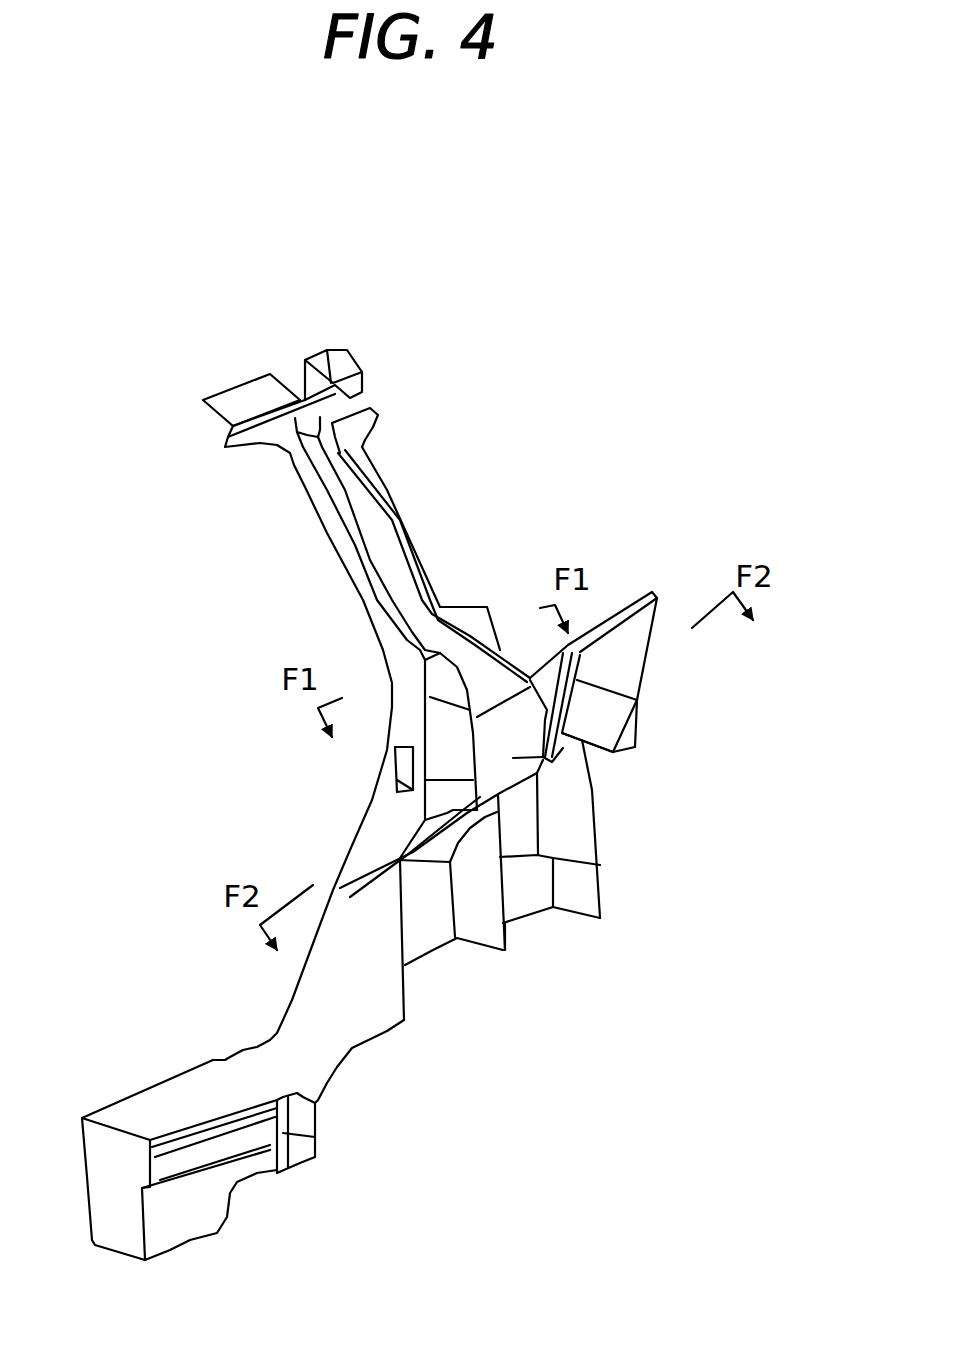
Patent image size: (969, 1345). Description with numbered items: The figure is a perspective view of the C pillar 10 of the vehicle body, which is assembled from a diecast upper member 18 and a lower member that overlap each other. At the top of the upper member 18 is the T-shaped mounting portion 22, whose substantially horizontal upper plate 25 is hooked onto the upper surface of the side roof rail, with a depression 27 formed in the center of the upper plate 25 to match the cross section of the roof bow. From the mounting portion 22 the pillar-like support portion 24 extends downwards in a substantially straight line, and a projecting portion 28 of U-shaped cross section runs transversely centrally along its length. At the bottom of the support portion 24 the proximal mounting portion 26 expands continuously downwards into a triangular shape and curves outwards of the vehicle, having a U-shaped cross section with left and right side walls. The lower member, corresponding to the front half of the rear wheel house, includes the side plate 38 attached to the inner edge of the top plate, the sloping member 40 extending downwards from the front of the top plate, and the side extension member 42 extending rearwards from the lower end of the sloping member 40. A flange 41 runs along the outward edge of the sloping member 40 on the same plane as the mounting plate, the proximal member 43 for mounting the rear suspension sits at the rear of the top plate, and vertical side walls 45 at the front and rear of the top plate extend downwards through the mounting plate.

The C pillar 10 is at (575, 420).
The upper member 18 is at (440, 515).
The mounting portion 22 is at (178, 438).
The support portion 24 is at (340, 476).
The upper plate 25 is at (240, 403).
The proximal mounting portion 26 is at (543, 757).
The depression 27 is at (292, 382).
The projecting portion 28 is at (402, 578).
The side plate 38 is at (433, 927).
The sloping member 40 is at (275, 1013).
The flange 41 is at (350, 1037).
The side extension member 42 is at (197, 1200).
The proximal member 43 is at (628, 603).
The side walls 45 is at (493, 938).